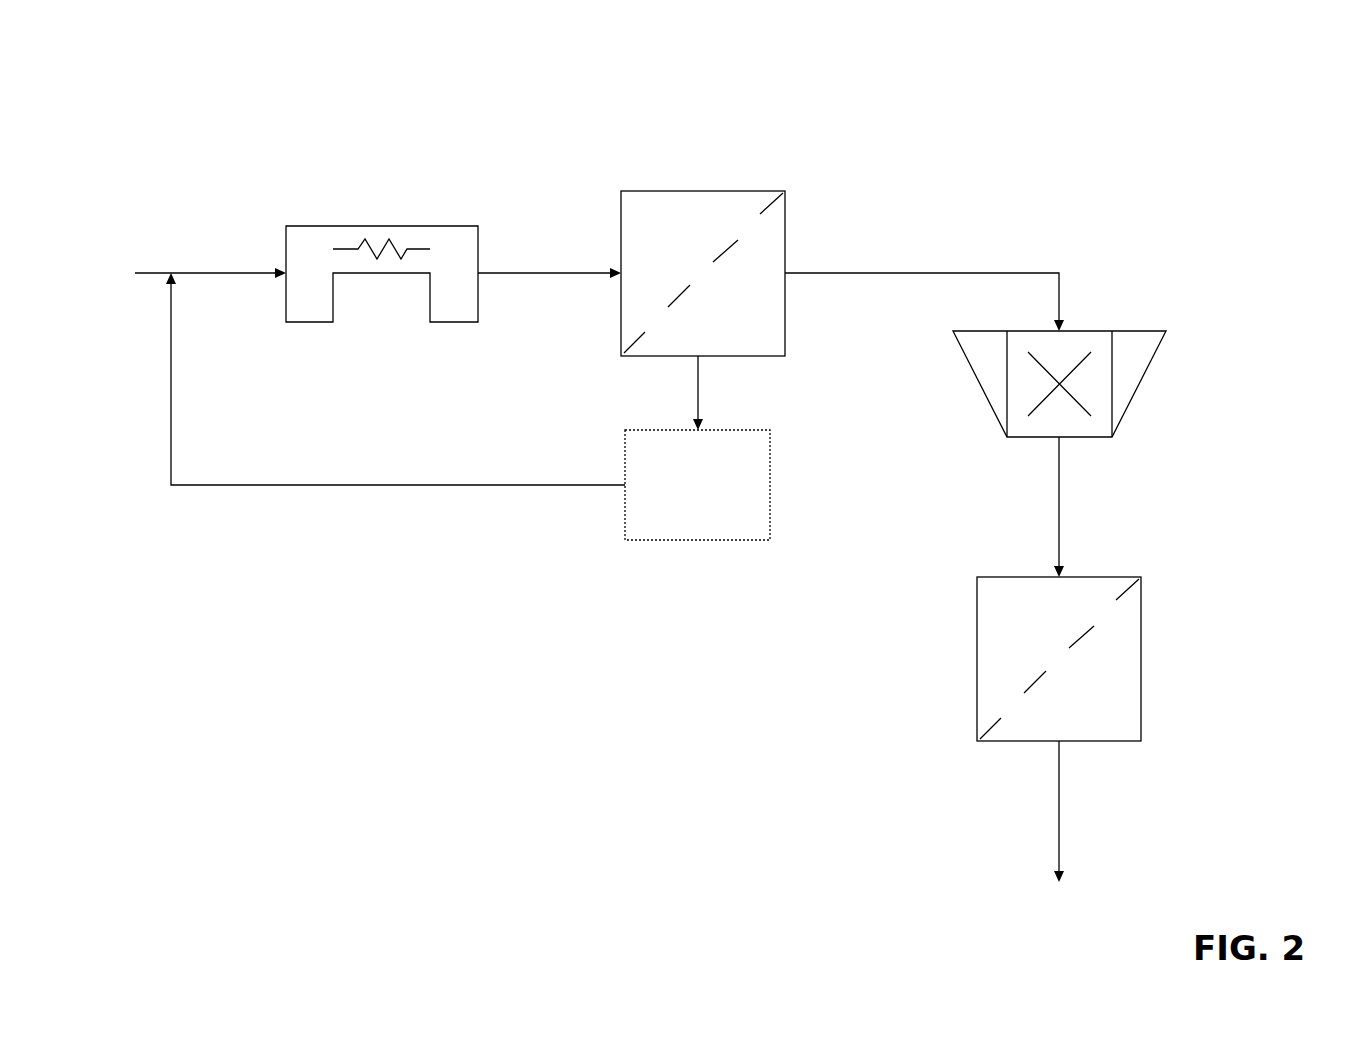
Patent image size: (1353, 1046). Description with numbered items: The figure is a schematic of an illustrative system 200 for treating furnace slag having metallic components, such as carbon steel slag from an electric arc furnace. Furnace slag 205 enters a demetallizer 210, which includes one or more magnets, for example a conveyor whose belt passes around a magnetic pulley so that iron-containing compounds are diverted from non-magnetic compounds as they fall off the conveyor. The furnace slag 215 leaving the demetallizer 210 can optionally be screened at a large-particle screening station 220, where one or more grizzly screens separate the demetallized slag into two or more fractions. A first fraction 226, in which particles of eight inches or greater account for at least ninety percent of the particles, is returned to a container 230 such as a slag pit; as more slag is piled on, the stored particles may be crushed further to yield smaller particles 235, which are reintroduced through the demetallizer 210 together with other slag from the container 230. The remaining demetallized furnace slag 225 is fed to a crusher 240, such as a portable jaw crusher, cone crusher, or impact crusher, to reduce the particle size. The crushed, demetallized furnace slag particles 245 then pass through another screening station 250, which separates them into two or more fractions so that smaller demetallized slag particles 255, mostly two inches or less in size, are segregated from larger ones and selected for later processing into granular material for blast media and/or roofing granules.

The system 200 is at (1192, 131).
The furnace slag 205 is at (220, 273).
The demetallizer 210 is at (378, 226).
The furnace slag from the demetallizer 215 is at (543, 273).
The large-particle screening station 220 is at (693, 191).
The demetallized furnace slag 225 is at (890, 273).
The first fraction 226 is at (698, 385).
The container 230 is at (770, 485).
The smaller particles 235 is at (170, 410).
The crusher 240 is at (1147, 331).
The crushed, demetallized furnace slag particles 245 is at (1059, 522).
The screening station 250 is at (1141, 655).
The smaller demetallized slag particles 255 is at (1059, 810).